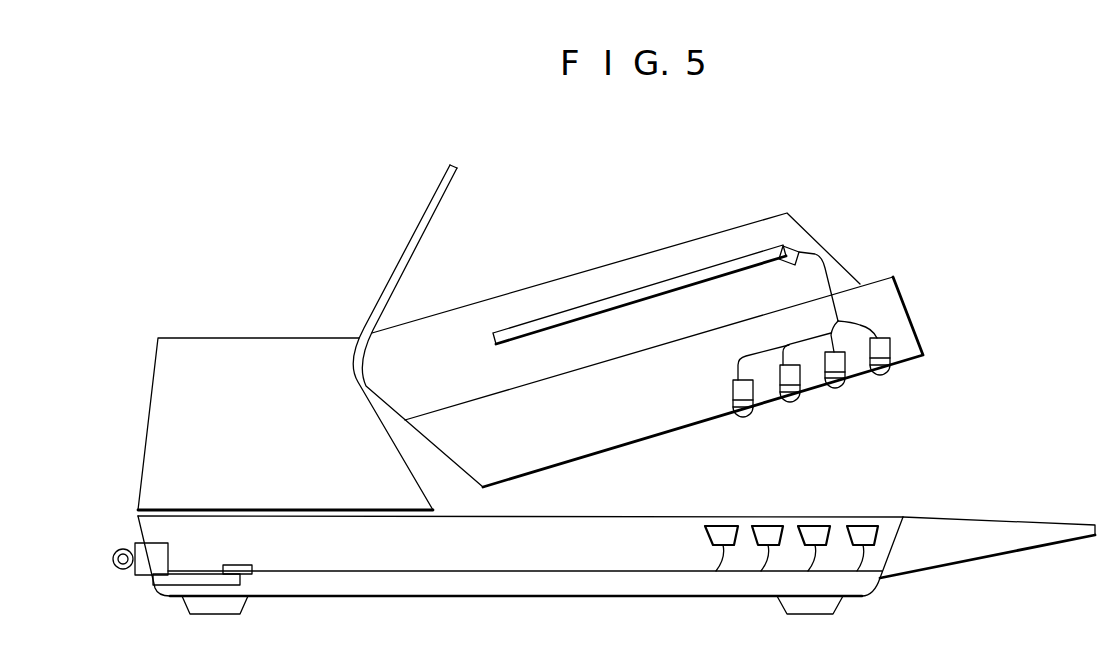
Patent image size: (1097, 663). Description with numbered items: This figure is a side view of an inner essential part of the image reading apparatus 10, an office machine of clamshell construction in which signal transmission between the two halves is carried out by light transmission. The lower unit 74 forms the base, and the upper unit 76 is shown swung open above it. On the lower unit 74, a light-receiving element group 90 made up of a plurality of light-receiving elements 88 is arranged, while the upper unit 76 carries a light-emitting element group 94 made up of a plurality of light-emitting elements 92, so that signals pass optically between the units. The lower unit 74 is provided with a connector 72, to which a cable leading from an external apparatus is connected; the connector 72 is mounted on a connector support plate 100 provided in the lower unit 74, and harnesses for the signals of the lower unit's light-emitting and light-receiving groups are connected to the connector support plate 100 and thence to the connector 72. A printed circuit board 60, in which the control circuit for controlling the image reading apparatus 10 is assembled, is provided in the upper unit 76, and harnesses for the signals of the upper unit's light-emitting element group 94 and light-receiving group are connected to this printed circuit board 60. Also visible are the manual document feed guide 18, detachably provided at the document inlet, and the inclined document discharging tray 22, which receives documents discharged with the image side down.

The image reading apparatus 10 is at (120, 427).
The manual document feed guide 18 is at (970, 553).
The document discharging tray 22 is at (426, 213).
The printed circuit board 60 is at (544, 314).
The connector 72 is at (143, 568).
The lower unit 74 is at (552, 560).
The upper unit 76 is at (672, 245).
The light-receiving elements 88 is at (768, 526).
The light-receiving element group 90 is at (692, 541).
The light-emitting elements 92 is at (753, 405).
The light-emitting element group 94 is at (727, 398).
The connector support plate 100 is at (200, 574).